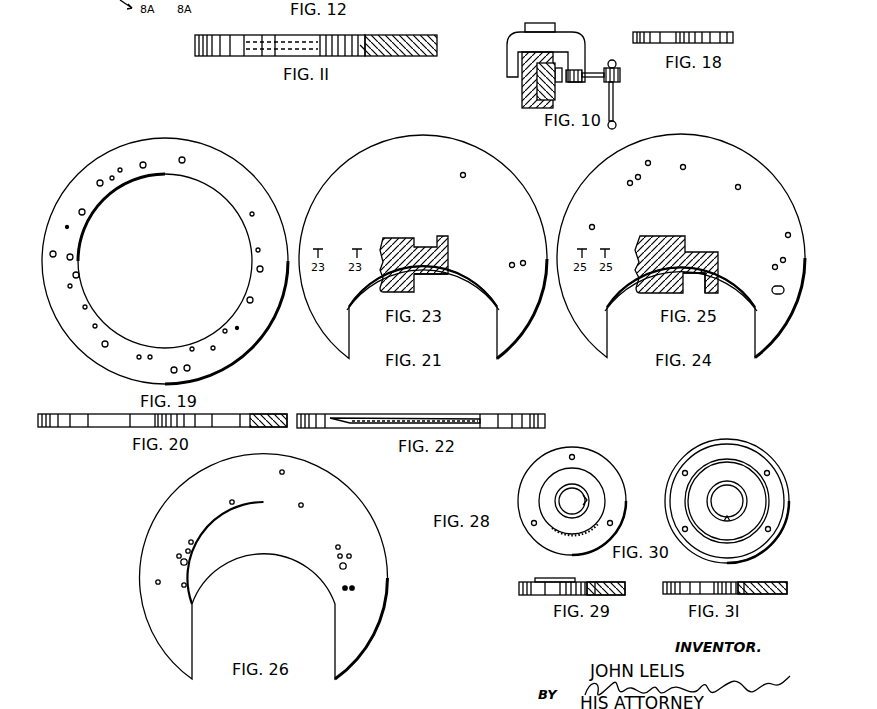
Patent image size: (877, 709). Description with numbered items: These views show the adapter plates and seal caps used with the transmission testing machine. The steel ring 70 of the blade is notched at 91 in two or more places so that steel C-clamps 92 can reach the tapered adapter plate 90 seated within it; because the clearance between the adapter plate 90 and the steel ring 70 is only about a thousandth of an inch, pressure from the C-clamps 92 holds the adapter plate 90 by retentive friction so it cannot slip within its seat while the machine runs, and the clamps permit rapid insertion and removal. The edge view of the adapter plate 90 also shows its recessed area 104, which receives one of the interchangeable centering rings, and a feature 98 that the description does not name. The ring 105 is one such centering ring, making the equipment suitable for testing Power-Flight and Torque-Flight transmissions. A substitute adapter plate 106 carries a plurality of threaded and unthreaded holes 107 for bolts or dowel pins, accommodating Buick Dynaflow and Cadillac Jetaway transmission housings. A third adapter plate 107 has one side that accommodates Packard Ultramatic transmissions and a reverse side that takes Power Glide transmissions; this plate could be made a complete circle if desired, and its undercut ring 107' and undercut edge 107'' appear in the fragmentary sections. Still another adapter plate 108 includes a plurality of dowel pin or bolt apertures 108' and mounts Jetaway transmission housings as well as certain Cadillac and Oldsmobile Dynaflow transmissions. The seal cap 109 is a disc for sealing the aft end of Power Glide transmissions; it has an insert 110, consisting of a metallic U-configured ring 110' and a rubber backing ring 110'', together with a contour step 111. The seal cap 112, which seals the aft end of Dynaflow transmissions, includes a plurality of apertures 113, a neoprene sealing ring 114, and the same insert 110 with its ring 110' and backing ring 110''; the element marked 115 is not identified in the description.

In FIG. 10, the steel ring 70 is at (522, 96).
In FIG. 11, the adapter plate 90 is at (404, 35).
In FIG. 10, the adapter plate 90 is at (557, 92).
In FIG. 10, the notch 91 is at (538, 26).
In FIG. 10, the C-clamp 92 is at (574, 40).
In FIG. 11, the joint line 98 is at (363, 56).
In FIG. 11, the recessed area 104 is at (365, 42).
In FIG. 18, the ring 105 is at (733, 38).
In FIG. 19, the adapter plate 106 is at (248, 176).
In FIG. 20, the adapter plate 106 is at (262, 412).
In FIG. 19, the holes 107 is at (156, 265).
In FIG. 21, the holes 107 is at (423, 246).
In FIG. 24, the holes 107 is at (681, 245).
In FIG. 23, the undercut ring 107' is at (421, 252).
In FIG. 25, the undercut ring 107' is at (716, 289).
In FIG. 23, the undercut edge 107'' is at (453, 287).
In FIG. 25, the undercut edge 107'' is at (686, 256).
In FIG. 26, the adapter plate 108 is at (270, 566).
In FIG. 26, the dowel pin or bolt apertures 108' is at (255, 530).
In FIG. 28, the seal cap 109 is at (603, 470).
In FIG. 29, the seal cap 109 is at (606, 584).
In FIG. 28, the insert 110 is at (605, 493).
In FIG. 29, the insert 110 is at (614, 595).
In FIG. 31, the insert 110 is at (759, 596).
In FIG. 29, the metallic U-configured ring 110' is at (580, 576).
In FIG. 31, the metallic U-configured ring 110' is at (706, 576).
In FIG. 29, the rubber backing ring 110'' is at (606, 577).
In FIG. 31, the rubber backing ring 110'' is at (762, 575).
In FIG. 28, the contour step 111 is at (607, 500).
In FIG. 29, the contour step 111 is at (540, 580).
In FIG. 30, the seal cap 112 is at (753, 460).
In FIG. 28, the apertures 113 is at (531, 526).
In FIG. 30, the apertures 113 is at (770, 472).
In FIG. 30, the neoprene sealing ring 114 is at (768, 505).
In FIG. 30, the notch 115 is at (727, 521).